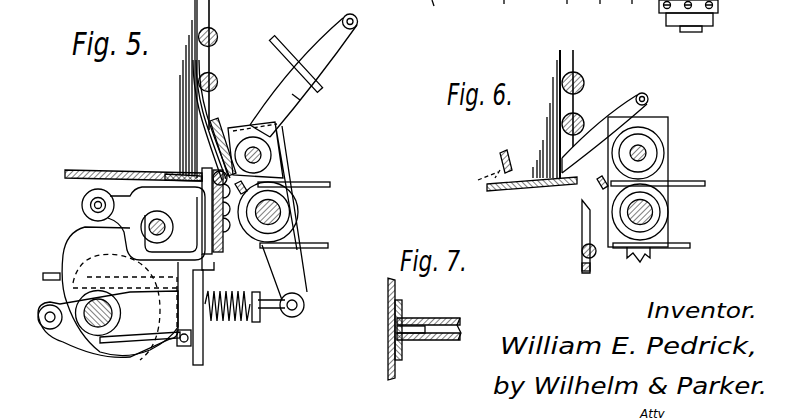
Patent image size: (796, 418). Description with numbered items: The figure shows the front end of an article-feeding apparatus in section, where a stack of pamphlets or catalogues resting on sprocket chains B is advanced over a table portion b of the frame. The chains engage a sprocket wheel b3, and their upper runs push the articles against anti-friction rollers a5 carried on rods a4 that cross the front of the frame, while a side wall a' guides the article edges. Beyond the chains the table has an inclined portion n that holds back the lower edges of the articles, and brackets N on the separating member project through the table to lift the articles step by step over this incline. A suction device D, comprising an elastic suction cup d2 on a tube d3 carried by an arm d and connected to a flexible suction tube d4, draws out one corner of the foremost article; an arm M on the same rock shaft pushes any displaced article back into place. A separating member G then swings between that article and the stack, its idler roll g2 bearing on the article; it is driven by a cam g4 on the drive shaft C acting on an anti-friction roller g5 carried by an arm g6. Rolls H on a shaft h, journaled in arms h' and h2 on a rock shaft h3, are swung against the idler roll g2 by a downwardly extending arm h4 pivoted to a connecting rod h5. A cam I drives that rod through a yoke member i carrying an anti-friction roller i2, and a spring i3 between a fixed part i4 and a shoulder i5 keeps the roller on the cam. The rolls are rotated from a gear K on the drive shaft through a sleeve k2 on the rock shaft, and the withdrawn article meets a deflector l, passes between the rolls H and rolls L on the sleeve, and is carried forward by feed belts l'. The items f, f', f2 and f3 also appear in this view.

In FIG. 5, the side wall a' is at (223, 65).
In FIG. 5, the anti-friction rollers a5 is at (212, 72).
In FIG. 6, the rods a4 is at (581, 114).
In FIG. 5, the arm d is at (292, 57).
In FIG. 5, the suction tube d4 is at (332, 62).
In FIG. 5, the tube d3 is at (300, 100).
In FIG. 7, the tube d3 is at (433, 318).
In FIG. 7, the suction cup d2 is at (388, 358).
In FIG. 5, the suction device D is at (224, 126).
In FIG. 7, the suction device D is at (388, 306).
In FIG. 5, the shaft h is at (253, 131).
In FIG. 6, the shaft h is at (654, 153).
In FIG. 5, the rolls H is at (278, 126).
In FIG. 6, the rolls H is at (668, 163).
In FIG. 5, the arm h2 is at (260, 184).
In FIG. 6, the arm h2 is at (670, 192).
In FIG. 5, the rock shaft h3 is at (280, 212).
In FIG. 6, the rock shaft h3 is at (662, 228).
In FIG. 5, the downwardly extending arm h4 is at (287, 270).
In FIG. 6, the downwardly extending arm h4 is at (655, 255).
In FIG. 5, the connecting rod h5 is at (272, 310).
In FIG. 6, the arm h' is at (706, 16).
In FIG. 5, the feed belts l' is at (292, 174).
In FIG. 6, the deflector l is at (594, 183).
In FIG. 5, the rolls L is at (288, 199).
In FIG. 6, the rolls L is at (665, 218).
In FIG. 5, the sleeve k2 is at (278, 223).
In FIG. 6, the sleeve k2 is at (630, 224).
In FIG. 6, the gear K is at (441, 12).
In FIG. 6, the screw f is at (503, 12).
In FIG. 6, the screw f' is at (567, 11).
In FIG. 6, the screw f2 is at (634, 13).
In FIG. 6, the screw f3 is at (602, 11).
In FIG. 5, the yoke member i is at (160, 350).
In FIG. 5, the anti-friction roller i2 is at (58, 312).
In FIG. 5, the spring i3 is at (208, 322).
In FIG. 5, the fixed part i4 is at (181, 350).
In FIG. 5, the shoulder i5 is at (256, 327).
In FIG. 5, the cam I is at (118, 353).
In FIG. 5, the drive shaft C is at (112, 312).
In FIG. 5, the cam g4 is at (110, 293).
In FIG. 5, the anti-friction roller g5 is at (82, 207).
In FIG. 5, the arm g6 is at (210, 265).
In FIG. 6, the idler roll g2 is at (582, 245).
In FIG. 5, the separating member G is at (222, 237).
In FIG. 6, the separating member G is at (580, 268).
In FIG. 5, the sprocket wheel b3 is at (156, 223).
In FIG. 6, the table portion b is at (495, 157).
In FIG. 5, the sprocket chains B is at (87, 168).
In FIG. 5, the brackets N is at (173, 170).
In FIG. 5, the inclined portion n is at (163, 172).
In FIG. 6, the inclined portion n is at (552, 186).
In FIG. 6, the arm M is at (647, 106).